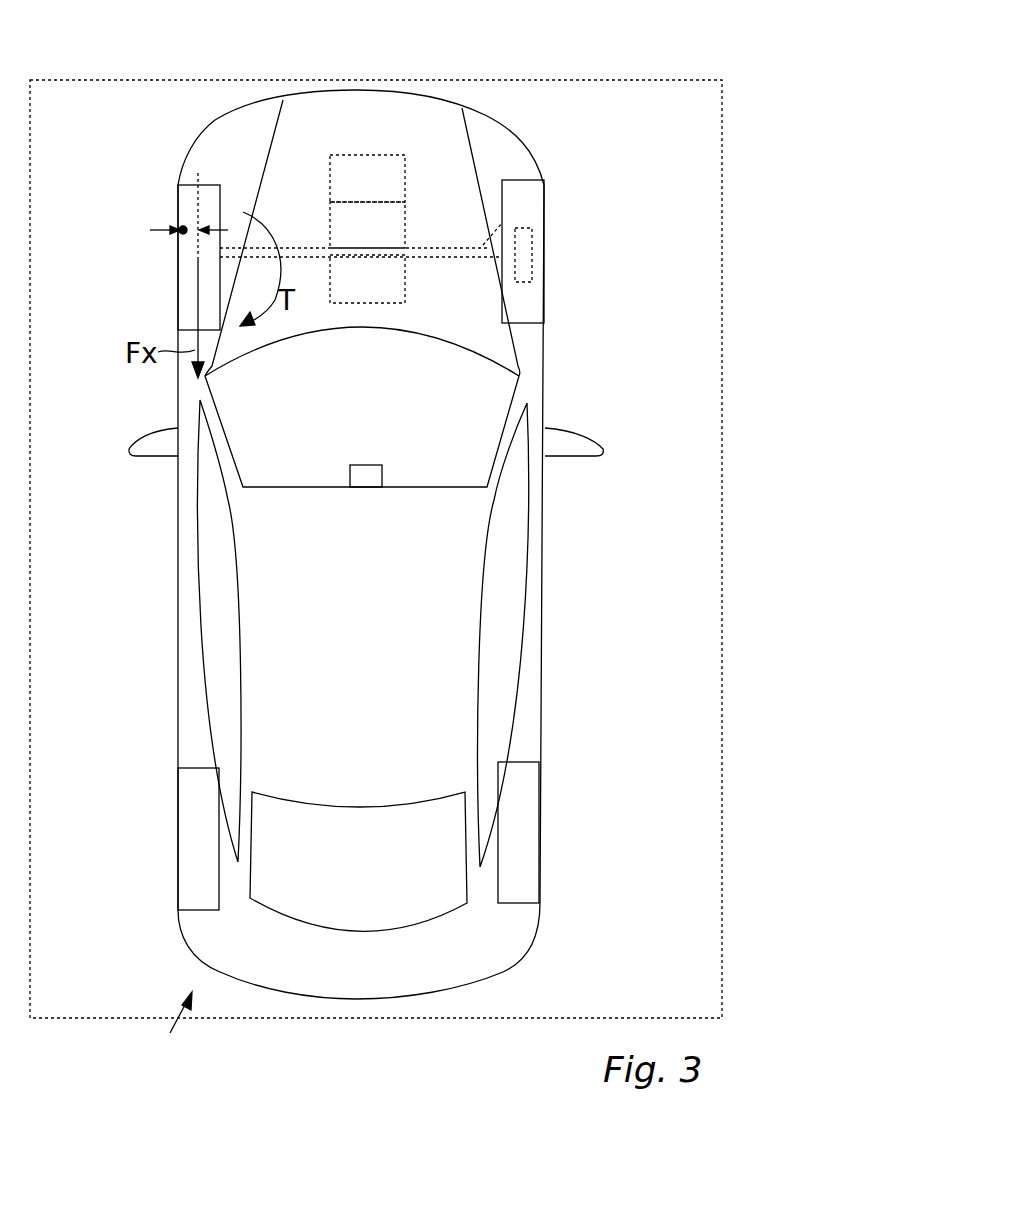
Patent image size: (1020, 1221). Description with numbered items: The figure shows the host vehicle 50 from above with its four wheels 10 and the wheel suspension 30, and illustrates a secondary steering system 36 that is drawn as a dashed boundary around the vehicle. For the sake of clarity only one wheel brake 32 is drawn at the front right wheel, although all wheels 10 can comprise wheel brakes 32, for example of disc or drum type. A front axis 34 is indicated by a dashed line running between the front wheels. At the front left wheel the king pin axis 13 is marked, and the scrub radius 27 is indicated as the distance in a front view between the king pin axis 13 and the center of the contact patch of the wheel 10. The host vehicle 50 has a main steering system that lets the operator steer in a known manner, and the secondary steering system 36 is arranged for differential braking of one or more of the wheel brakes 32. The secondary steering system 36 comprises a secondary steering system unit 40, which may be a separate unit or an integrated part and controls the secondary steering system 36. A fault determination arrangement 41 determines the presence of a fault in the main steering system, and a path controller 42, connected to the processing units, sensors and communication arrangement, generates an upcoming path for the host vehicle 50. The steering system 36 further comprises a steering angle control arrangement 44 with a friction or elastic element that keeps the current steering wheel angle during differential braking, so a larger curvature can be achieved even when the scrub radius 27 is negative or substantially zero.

The wheel 10 is at (178, 305).
The king pin axis 13 is at (182, 229).
The scrub radius 27 is at (172, 215).
The wheel suspension 30 is at (519, 102).
The wheel brake 32 is at (533, 267).
The front axis 34 is at (460, 247).
The secondary steering system 36 is at (645, 80).
The secondary steering system unit 40 is at (367, 279).
The fault determination arrangement 41 is at (367, 225).
The path controller 42 is at (367, 178).
The steering angle control arrangement 44 is at (483, 243).
The host vehicle 50 is at (163, 1033).